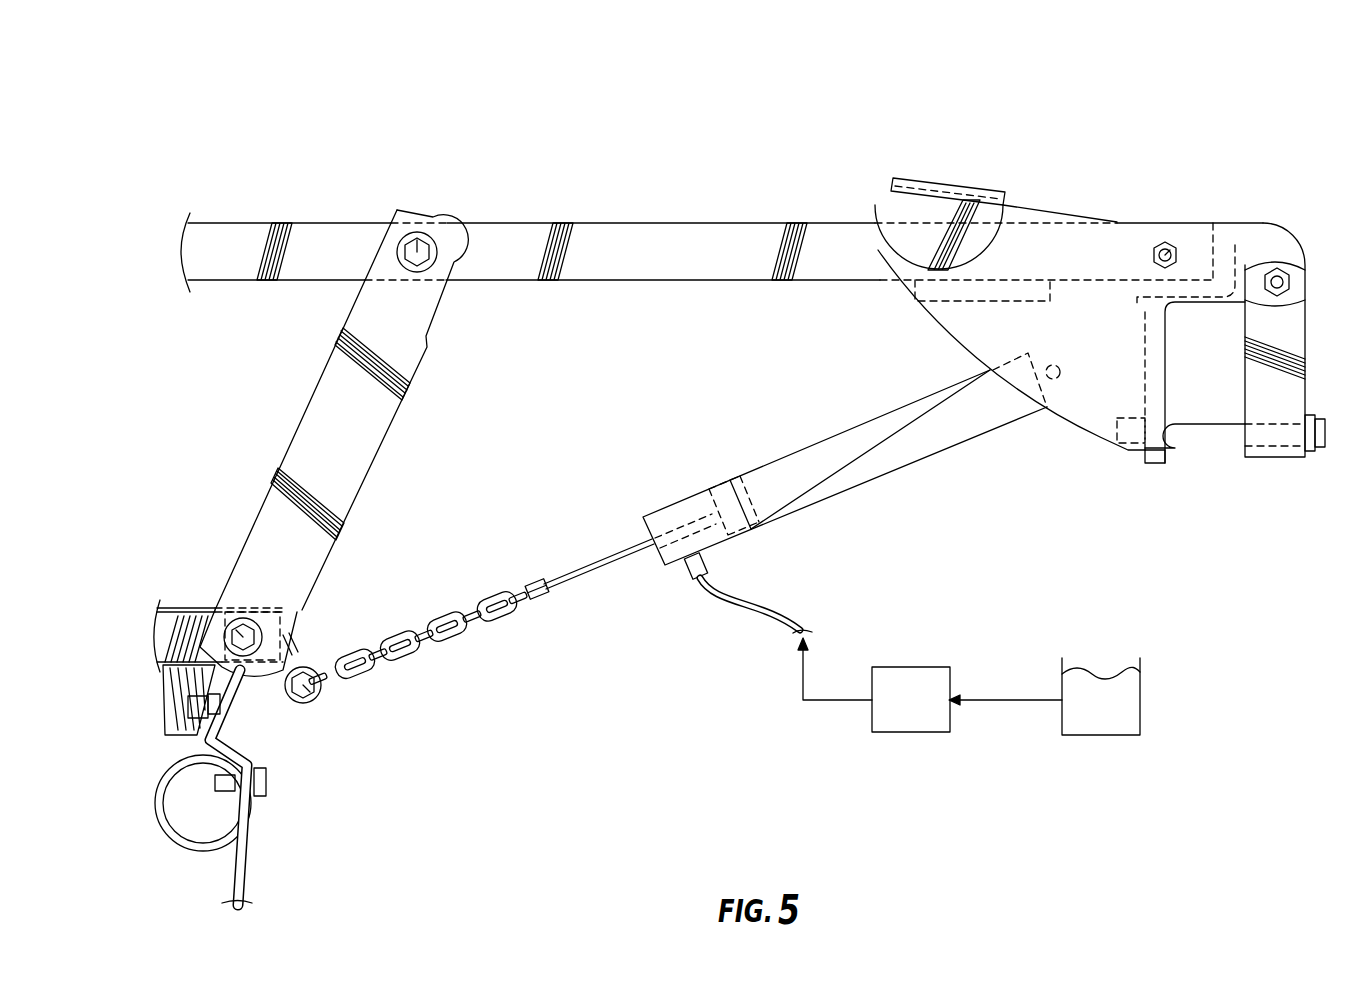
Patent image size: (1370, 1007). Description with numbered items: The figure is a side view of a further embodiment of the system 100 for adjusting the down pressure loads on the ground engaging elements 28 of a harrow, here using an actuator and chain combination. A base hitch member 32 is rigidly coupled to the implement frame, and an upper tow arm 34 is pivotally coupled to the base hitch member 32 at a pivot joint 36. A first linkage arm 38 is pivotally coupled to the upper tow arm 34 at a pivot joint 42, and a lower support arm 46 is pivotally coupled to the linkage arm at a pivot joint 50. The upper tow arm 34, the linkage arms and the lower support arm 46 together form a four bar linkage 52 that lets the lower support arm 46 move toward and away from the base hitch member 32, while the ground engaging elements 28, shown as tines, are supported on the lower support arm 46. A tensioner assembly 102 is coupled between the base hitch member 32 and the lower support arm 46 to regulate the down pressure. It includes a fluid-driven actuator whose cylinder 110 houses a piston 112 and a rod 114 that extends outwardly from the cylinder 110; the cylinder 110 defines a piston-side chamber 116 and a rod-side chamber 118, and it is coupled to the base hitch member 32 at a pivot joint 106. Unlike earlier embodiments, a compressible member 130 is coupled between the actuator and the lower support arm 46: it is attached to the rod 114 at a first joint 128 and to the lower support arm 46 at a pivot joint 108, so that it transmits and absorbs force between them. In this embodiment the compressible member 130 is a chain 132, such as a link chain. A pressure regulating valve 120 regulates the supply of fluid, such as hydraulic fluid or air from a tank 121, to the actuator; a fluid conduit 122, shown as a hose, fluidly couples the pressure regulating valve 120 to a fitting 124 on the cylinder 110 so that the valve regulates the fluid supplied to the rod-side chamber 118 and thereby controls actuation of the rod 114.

The system 100 is at (231, 138).
The four bar linkage 52 is at (352, 212).
The pivot joint 42 is at (418, 243).
The upper tow arm 34 is at (683, 222).
The base hitch member 32 is at (1091, 255).
The pivot joint 36 is at (1165, 249).
The first linkage arm 38 is at (292, 430).
The tensioner assembly 102 is at (633, 425).
The cylinder 110 is at (830, 436).
The piston-side chamber 116 is at (768, 474).
The piston 112 is at (713, 500).
The rod-side chamber 118 is at (682, 512).
The rod 114 is at (590, 548).
The compressible member 130 is at (399, 590).
The lower support arm 46 is at (177, 612).
The pivot joint 50 is at (228, 626).
The fluid conduit 122 is at (770, 602).
The pressure regulating valve 120 is at (940, 666).
The fitting 124 is at (692, 580).
The first joint 128 is at (545, 603).
The chain 132 is at (430, 652).
The pivot joint 108 is at (312, 704).
The pivot joint 106 is at (1052, 412).
The tank 121 is at (1128, 700).
The ground engaging elements 28 is at (250, 852).